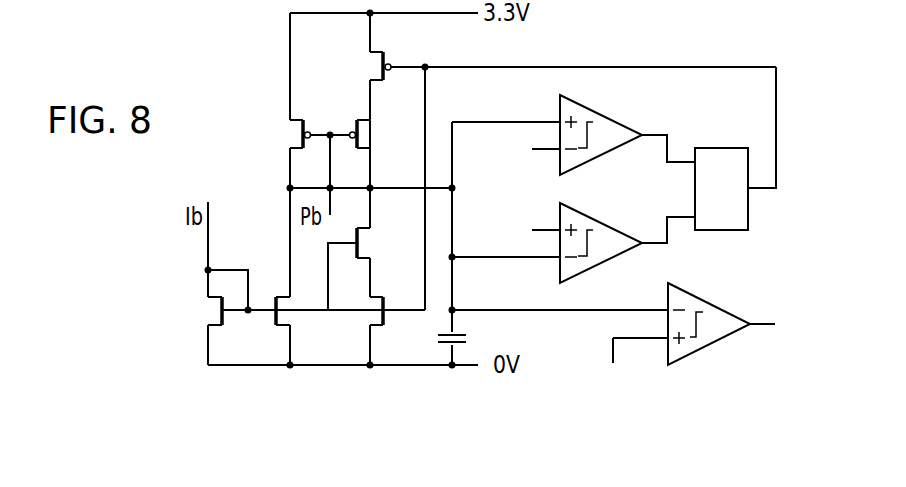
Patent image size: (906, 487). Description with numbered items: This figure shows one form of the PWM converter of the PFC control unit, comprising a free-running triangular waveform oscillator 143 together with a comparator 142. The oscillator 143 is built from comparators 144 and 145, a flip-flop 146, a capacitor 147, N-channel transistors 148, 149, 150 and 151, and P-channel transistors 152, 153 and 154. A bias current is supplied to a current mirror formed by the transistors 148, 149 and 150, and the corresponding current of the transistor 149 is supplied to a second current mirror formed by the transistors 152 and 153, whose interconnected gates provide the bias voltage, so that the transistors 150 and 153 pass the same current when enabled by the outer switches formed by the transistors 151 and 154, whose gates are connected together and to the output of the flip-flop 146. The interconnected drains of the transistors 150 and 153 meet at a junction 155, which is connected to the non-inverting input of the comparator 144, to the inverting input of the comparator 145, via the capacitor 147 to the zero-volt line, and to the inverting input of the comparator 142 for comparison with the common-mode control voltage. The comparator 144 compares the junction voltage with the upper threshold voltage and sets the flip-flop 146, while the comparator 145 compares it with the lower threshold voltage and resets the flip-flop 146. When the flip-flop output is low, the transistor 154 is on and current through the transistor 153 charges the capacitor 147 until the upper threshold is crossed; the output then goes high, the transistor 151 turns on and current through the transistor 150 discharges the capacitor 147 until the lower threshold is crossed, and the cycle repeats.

The comparator 142 is at (712, 307).
The free-running triangular waveform oscillator 143 is at (523, 108).
The comparator 144 is at (613, 132).
The comparator 145 is at (613, 240).
The flip-flop 146 is at (729, 153).
The capacitor 147 is at (468, 338).
The N-channel transistor 148 is at (213, 315).
The N-channel transistor 149 is at (276, 290).
The N-channel transistor 150 is at (363, 240).
The N-channel transistor 151 is at (373, 315).
The P-channel transistor 152 is at (288, 130).
The P-channel transistor 153 is at (365, 138).
The P-channel transistor 154 is at (378, 67).
The junction 155 is at (456, 188).